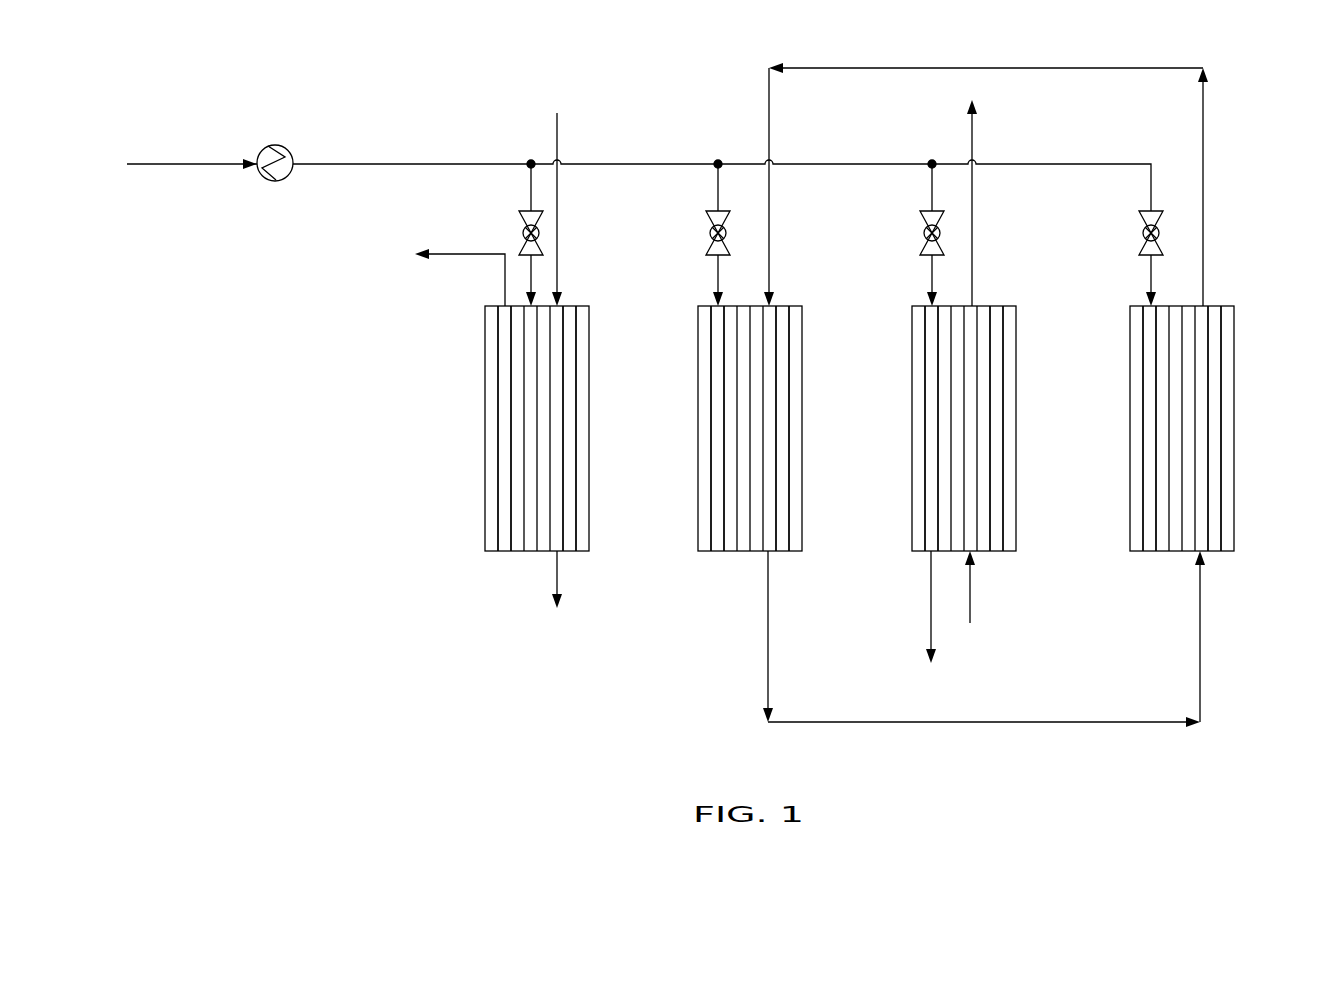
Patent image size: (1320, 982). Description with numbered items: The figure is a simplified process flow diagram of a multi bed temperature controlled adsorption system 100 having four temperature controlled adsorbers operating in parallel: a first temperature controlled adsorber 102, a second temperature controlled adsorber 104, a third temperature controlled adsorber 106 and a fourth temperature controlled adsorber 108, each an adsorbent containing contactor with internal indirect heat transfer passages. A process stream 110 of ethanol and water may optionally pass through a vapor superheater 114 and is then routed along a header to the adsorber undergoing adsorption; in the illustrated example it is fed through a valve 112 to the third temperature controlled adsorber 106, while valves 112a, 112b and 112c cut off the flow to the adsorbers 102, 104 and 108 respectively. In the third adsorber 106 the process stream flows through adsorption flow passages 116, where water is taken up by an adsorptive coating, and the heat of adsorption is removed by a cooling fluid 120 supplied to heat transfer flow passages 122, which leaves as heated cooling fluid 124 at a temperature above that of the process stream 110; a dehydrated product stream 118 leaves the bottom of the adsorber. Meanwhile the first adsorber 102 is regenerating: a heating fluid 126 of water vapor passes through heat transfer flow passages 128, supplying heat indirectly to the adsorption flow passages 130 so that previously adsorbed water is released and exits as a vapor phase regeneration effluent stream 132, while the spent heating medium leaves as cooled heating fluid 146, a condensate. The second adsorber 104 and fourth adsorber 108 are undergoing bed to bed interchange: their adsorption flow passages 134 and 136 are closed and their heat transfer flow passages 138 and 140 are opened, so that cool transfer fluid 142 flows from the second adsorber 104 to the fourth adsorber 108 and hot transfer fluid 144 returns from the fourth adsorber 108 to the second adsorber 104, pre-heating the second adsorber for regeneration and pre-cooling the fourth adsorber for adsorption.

The multi bed temperature controlled adsorption system 100 is at (341, 342).
The first temperature controlled adsorber 102 is at (592, 517).
The second temperature controlled adsorber 104 is at (805, 518).
The third temperature controlled adsorber 106 is at (1018, 518).
The fourth temperature controlled adsorber 108 is at (1238, 518).
The process stream 110 is at (191, 161).
The valve 112 is at (920, 218).
The valve 112a is at (521, 211).
The valve 112b is at (708, 211).
The valve 112c is at (1144, 211).
The vapor superheater 114 is at (291, 145).
The adsorption flow passages 116 is at (932, 362).
The outlet stream of third reactor 118 is at (929, 605).
The cooling fluid 120 is at (975, 600).
The heat transfer flow passages 122 is at (972, 456).
The heated cooling fluid 124 is at (976, 137).
The heating fluid 126 is at (562, 137).
The heat transfer flow passages 128 is at (558, 331).
The adsorption flow passages 130 is at (502, 330).
The regeneration effluent stream 132 is at (447, 257).
The adsorption flow passages 134 is at (718, 362).
The adsorption flow passages 136 is at (1150, 362).
The heat transfer flow passages 138 is at (770, 456).
The heat transfer flow passages 140 is at (1200, 456).
The cool transfer fluid 142 is at (1204, 637).
The hot transfer fluid 144 is at (1207, 187).
The cooled heating fluid 146 is at (560, 575).